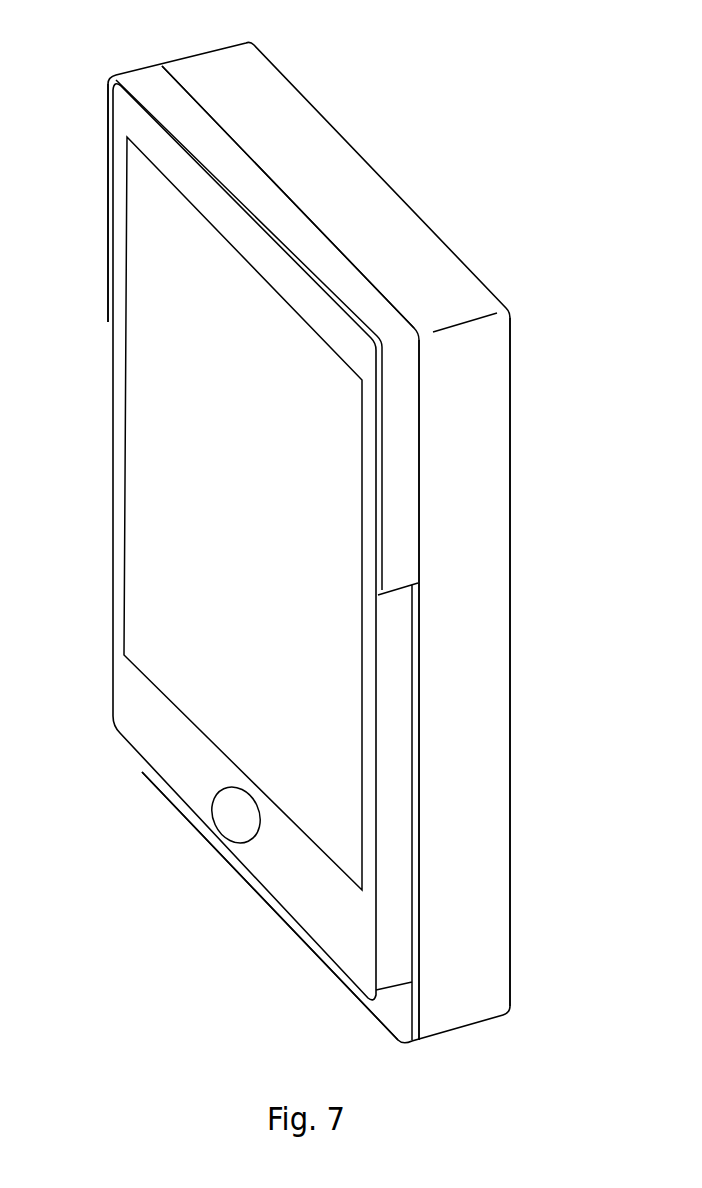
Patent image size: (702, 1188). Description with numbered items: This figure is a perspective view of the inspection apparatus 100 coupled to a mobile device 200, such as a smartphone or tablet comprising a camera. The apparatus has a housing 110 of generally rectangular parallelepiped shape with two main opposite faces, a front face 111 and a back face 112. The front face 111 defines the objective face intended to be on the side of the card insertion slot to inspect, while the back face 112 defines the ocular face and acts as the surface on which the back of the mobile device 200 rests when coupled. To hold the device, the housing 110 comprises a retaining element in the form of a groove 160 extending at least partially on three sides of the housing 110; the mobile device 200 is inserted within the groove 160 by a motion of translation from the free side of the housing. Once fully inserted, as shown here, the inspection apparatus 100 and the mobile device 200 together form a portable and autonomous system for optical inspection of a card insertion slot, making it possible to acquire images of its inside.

The inspection apparatus 100 is at (178, 60).
The housing 110 is at (472, 1005).
The front face 111 is at (507, 963).
The back face 112 is at (393, 1005).
The groove 160 is at (307, 242).
The mobile device 200 is at (105, 708).